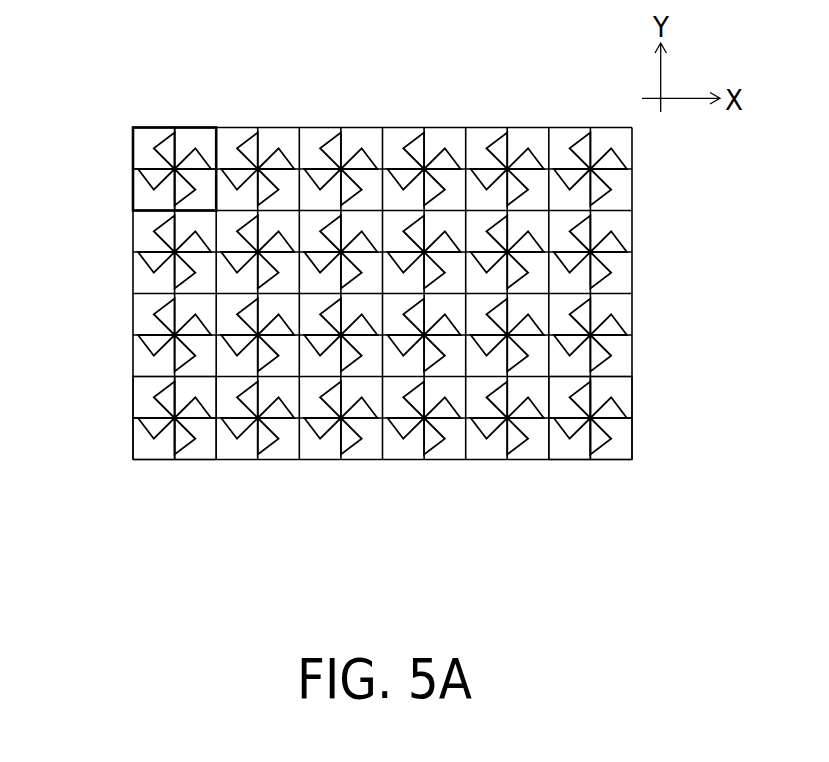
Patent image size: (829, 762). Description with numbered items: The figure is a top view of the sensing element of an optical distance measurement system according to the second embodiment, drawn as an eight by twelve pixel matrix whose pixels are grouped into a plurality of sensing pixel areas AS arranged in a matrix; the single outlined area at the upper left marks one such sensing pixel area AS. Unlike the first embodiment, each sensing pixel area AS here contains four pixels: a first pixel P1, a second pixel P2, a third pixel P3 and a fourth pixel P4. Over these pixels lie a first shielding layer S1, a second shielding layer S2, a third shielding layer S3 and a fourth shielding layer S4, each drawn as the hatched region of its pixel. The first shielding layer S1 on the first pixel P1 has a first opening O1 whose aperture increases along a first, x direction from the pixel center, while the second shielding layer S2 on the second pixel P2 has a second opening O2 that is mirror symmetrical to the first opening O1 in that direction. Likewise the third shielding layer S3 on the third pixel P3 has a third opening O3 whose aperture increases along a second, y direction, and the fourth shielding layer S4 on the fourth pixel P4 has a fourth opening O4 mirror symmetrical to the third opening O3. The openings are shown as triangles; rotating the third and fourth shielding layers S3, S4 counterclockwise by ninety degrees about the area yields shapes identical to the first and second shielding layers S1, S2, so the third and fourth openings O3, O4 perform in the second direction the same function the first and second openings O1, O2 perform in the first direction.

The sensing pixel area AS is at (132, 155).
The first pixel P1 is at (150, 127).
The second pixel P2 is at (202, 127).
The third pixel P3 is at (132, 200).
The fourth pixel P4 is at (210, 127).
The first shielding layer S1 is at (146, 390).
The second shielding layer S2 is at (196, 447).
The third shielding layer S3 is at (146, 447).
The fourth shielding layer S4 is at (210, 397).
The first opening O1 is at (585, 393).
The second opening O2 is at (602, 444).
The third opening O3 is at (568, 429).
The fourth opening O4 is at (614, 410).